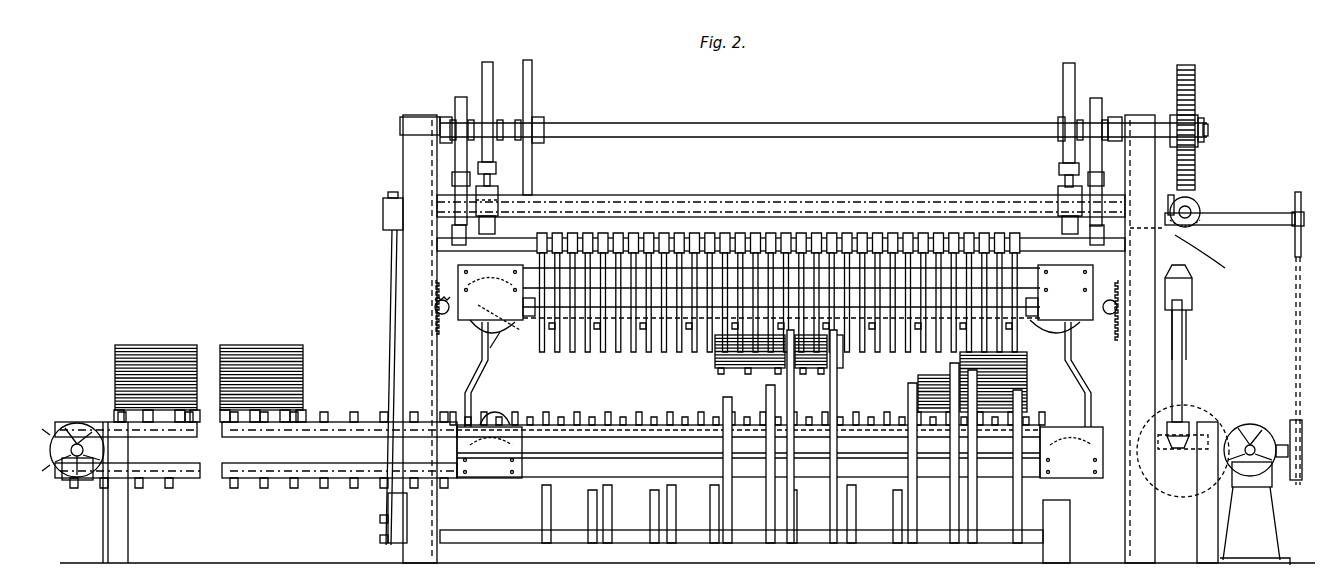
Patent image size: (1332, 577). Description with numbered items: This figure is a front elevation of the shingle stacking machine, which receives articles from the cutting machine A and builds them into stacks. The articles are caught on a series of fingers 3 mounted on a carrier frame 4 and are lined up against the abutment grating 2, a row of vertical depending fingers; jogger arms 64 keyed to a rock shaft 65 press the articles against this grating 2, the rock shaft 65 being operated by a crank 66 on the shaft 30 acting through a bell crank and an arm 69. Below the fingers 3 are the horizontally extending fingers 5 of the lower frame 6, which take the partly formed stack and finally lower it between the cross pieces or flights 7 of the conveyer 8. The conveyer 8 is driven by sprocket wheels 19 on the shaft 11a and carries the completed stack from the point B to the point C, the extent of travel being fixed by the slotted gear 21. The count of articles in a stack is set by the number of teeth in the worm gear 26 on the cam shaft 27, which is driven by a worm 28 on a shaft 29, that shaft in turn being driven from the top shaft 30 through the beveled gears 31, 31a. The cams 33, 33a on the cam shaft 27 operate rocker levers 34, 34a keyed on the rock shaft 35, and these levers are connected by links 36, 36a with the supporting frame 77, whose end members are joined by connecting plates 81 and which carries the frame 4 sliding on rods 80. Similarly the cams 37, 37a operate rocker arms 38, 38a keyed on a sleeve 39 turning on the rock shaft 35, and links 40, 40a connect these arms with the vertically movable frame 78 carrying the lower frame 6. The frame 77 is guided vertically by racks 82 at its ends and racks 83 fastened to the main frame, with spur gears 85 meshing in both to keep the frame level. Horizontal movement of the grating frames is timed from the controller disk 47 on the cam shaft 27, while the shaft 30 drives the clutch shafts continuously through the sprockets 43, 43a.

The grating or abutment member 2 is at (598, 352).
The fingers 3 is at (668, 352).
The carrier frame 4 is at (1092, 360).
The horizontally extending fingers 5 is at (556, 412).
The lower frame 6 is at (495, 410).
The cross pieces or flights 7 is at (640, 412).
The conveyer 8 is at (365, 478).
The shaft 11a is at (1250, 490).
The sprocket wheels 19 is at (1255, 420).
The gear 21 is at (1195, 410).
The worm gear 26 is at (1196, 98).
The cam shaft 27 is at (910, 128).
The worm 28 is at (1195, 205).
The shaft 29 is at (1200, 210).
The shaft 30 is at (1245, 222).
The beveled gear 31 is at (1192, 226).
The beveled gear 31a is at (1210, 255).
The cam 33 is at (1097, 96).
The cam 33a is at (460, 96).
The rocker lever 34 is at (1092, 228).
The rocker lever 34a is at (456, 226).
The rock shaft 35 is at (650, 195).
The link 36 is at (1110, 262).
The link 36a is at (458, 272).
The cam 37 is at (1072, 62).
The cam 37a is at (488, 60).
The rocker arm 38 is at (1058, 198).
The rocker arm 38a is at (500, 195).
The sleeve 39 is at (878, 236).
The link 40 is at (1090, 380).
The link 40a is at (480, 375).
The sprocket 43 is at (1297, 200).
The sprocket 43a is at (1293, 480).
The controller disk 47 is at (533, 62).
The jogger arms 64 is at (545, 522).
The rock shaft 65 is at (480, 538).
The crank 66 is at (392, 198).
The arm 69 is at (388, 526).
The supporting frame 77 is at (512, 328).
The frame 78 is at (488, 478).
The rods 80 is at (480, 325).
The connecting plates 81 is at (576, 352).
The racks 82 is at (436, 303).
The racks 83 is at (436, 330).
The spur gears 85 is at (1192, 300).
The cutting machine A is at (745, 355).
The point B is at (1000, 375).
The point C is at (190, 343).